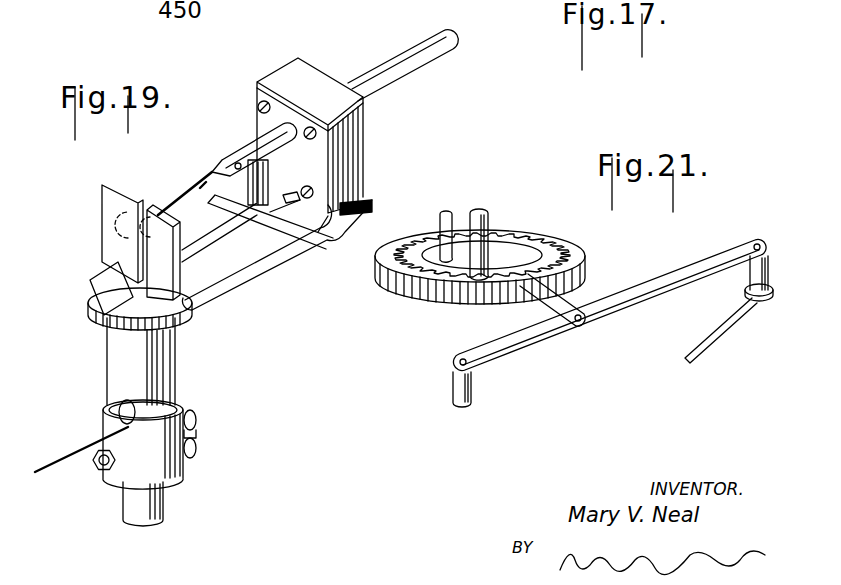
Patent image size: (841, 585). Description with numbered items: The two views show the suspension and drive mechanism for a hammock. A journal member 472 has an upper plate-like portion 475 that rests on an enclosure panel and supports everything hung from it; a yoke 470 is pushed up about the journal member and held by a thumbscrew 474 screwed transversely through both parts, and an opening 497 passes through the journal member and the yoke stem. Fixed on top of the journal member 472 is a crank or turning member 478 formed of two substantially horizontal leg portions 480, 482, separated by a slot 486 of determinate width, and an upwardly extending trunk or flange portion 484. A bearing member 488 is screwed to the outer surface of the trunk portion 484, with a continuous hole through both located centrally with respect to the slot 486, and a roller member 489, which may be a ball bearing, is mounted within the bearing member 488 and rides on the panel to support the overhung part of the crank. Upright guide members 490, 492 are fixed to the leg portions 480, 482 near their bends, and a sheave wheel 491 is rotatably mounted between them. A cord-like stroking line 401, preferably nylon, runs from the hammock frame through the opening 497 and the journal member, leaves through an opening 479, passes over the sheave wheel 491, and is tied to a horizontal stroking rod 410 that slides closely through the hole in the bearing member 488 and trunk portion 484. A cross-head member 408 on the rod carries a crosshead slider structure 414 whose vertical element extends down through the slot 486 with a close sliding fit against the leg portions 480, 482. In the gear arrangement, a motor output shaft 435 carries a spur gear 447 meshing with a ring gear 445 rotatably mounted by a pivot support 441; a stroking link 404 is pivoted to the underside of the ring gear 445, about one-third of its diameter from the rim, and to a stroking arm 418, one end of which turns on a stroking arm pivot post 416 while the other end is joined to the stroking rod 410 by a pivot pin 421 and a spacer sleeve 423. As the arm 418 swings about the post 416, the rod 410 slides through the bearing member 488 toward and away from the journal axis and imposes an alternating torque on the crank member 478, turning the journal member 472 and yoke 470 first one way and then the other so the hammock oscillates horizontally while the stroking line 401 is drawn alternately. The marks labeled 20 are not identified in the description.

In FIG. 19, the section line 20 is at (108, 393).
In FIG. 19, the stroking line 401 is at (192, 186).
In FIG. 21, the stroking link 404 is at (543, 315).
In FIG. 19, the cross-head member 408 is at (285, 226).
In FIG. 19, the stroking rod 410 is at (392, 62).
In FIG. 21, the stroking rod 410 is at (707, 350).
In FIG. 19, the crosshead slider structure 414 is at (258, 183).
In FIG. 21, the stroking arm pivot post 416 is at (457, 388).
In FIG. 21, the stroking arm 418 is at (660, 287).
In FIG. 21, the pivot pin 421 is at (758, 246).
In FIG. 21, the spacer sleeve 423 is at (757, 273).
In FIG. 21, the motor output shaft 435 is at (450, 212).
In FIG. 21, the pivot support 441 is at (488, 222).
In FIG. 21, the ring gear 445 is at (580, 250).
In FIG. 21, the spur gear 447 is at (433, 240).
In FIG. 19, the yoke 470 is at (180, 470).
In FIG. 19, the journal member 472 is at (172, 352).
In FIG. 19, the thumbscrew 474 is at (196, 440).
In FIG. 19, the upper plate-like portion 475 is at (90, 312).
In FIG. 19, the crank member 478 is at (308, 236).
In FIG. 19, the opening 479 is at (130, 297).
In FIG. 19, the leg portion 480 is at (193, 217).
In FIG. 19, the leg portion 482 is at (255, 258).
In FIG. 19, the trunk portion 484 is at (255, 88).
In FIG. 19, the slot 486 is at (212, 248).
In FIG. 19, the bearing member 488 is at (306, 73).
In FIG. 19, the roller member 489 is at (358, 210).
In FIG. 19, the upright guide member 490 is at (103, 188).
In FIG. 19, the sheave wheel 491 is at (135, 225).
In FIG. 19, the upright guide member 492 is at (148, 200).
In FIG. 19, the opening 497 is at (150, 402).